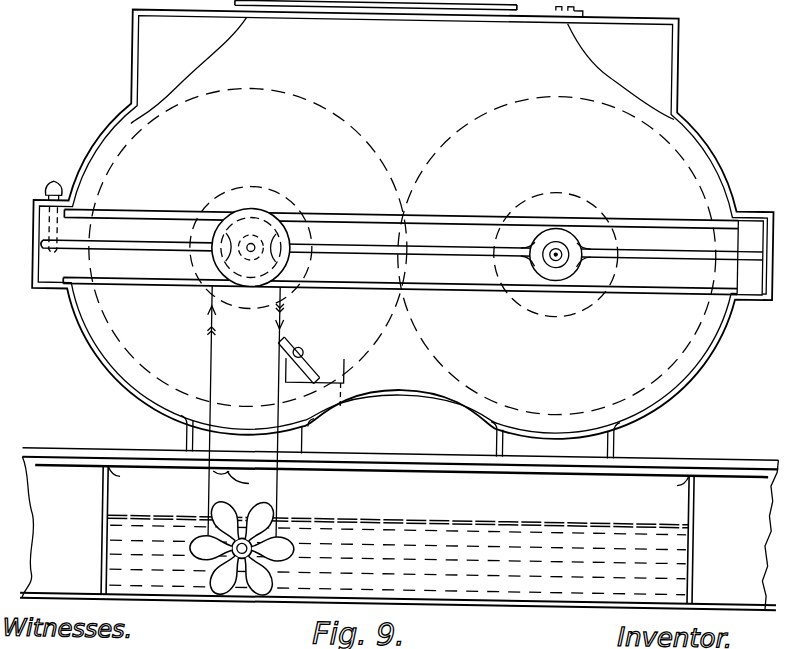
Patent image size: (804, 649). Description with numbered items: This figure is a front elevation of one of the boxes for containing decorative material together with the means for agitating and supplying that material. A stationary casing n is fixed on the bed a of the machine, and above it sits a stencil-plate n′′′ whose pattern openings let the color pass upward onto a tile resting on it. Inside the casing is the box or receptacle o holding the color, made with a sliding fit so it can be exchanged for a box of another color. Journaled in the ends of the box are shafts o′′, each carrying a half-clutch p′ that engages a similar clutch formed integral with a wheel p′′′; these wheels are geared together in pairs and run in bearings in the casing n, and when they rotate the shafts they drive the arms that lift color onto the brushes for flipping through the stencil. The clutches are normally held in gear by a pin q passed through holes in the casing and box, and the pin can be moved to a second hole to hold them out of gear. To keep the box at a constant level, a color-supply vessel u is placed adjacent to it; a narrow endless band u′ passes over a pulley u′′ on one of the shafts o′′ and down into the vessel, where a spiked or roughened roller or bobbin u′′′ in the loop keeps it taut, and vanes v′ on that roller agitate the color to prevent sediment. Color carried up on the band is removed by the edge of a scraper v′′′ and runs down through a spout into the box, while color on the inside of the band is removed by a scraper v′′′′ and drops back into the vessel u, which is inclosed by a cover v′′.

The stationary casing n is at (186, 20).
The stencil-plate n′′′ is at (275, 10).
The box or receptacle o is at (207, 62).
The wheel p′′′ is at (324, 106).
The half-clutch p′ is at (233, 188).
The shaft o′′ is at (254, 239).
The pulley u′′ is at (258, 203).
The pin q is at (55, 186).
The endless band u′ is at (284, 342).
The scraper v′′′ is at (346, 358).
The scraper v′′′′ is at (189, 455).
The bed a is at (82, 470).
The color-supply vessel u is at (400, 535).
The cover v′′ is at (121, 474).
The roller or bobbin u′′′ is at (255, 518).
The vanes v′ is at (275, 520).